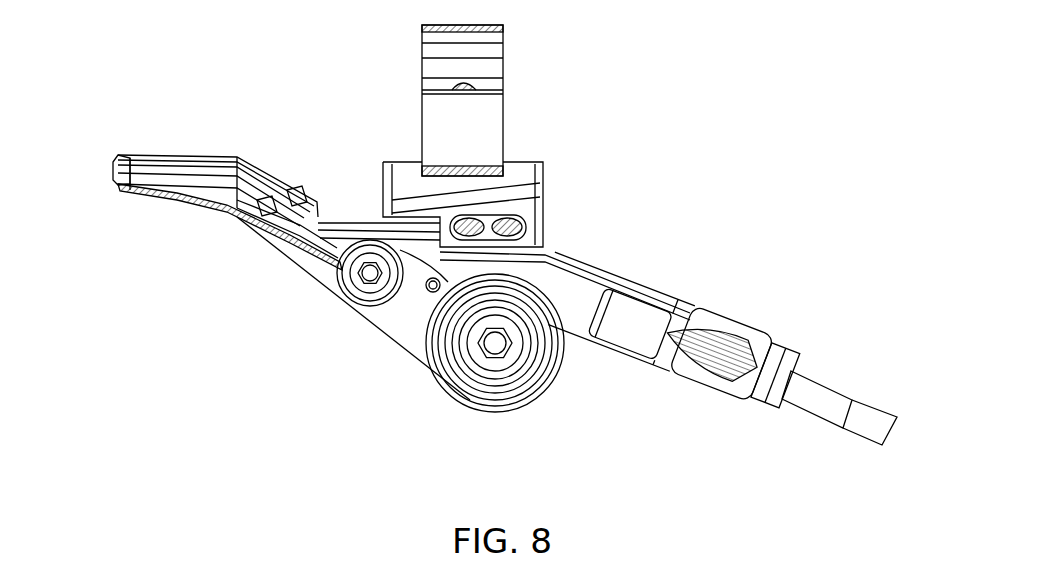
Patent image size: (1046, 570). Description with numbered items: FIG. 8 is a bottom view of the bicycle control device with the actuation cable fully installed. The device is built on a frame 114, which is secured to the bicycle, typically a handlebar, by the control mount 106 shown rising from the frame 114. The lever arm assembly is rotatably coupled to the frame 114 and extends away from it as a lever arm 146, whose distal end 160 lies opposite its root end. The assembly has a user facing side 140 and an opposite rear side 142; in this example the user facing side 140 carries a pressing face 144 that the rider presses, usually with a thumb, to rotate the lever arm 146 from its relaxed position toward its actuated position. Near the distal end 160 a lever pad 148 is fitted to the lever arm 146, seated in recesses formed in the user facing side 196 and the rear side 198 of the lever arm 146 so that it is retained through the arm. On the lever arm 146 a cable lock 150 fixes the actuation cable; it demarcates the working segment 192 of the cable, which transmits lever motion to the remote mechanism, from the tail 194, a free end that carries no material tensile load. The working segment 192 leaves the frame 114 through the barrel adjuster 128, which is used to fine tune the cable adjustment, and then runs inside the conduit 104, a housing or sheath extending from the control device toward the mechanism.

The conduit 104 is at (818, 403).
The control mount 106 is at (477, 123).
The frame 114 is at (628, 332).
The barrel adjuster 128 is at (698, 322).
The user facing side 140 is at (184, 126).
The rear side 142 is at (230, 267).
The pressing face 144 is at (184, 155).
The lever arm 146 is at (400, 327).
The lever pad 148 is at (140, 157).
The cable lock 150 is at (358, 283).
The distal end 160 is at (108, 183).
The working segment 192 is at (545, 283).
The tail 194 is at (307, 247).
The user facing side of the lever arm 196 is at (182, 149).
The rear side of the lever arm 198 is at (203, 237).